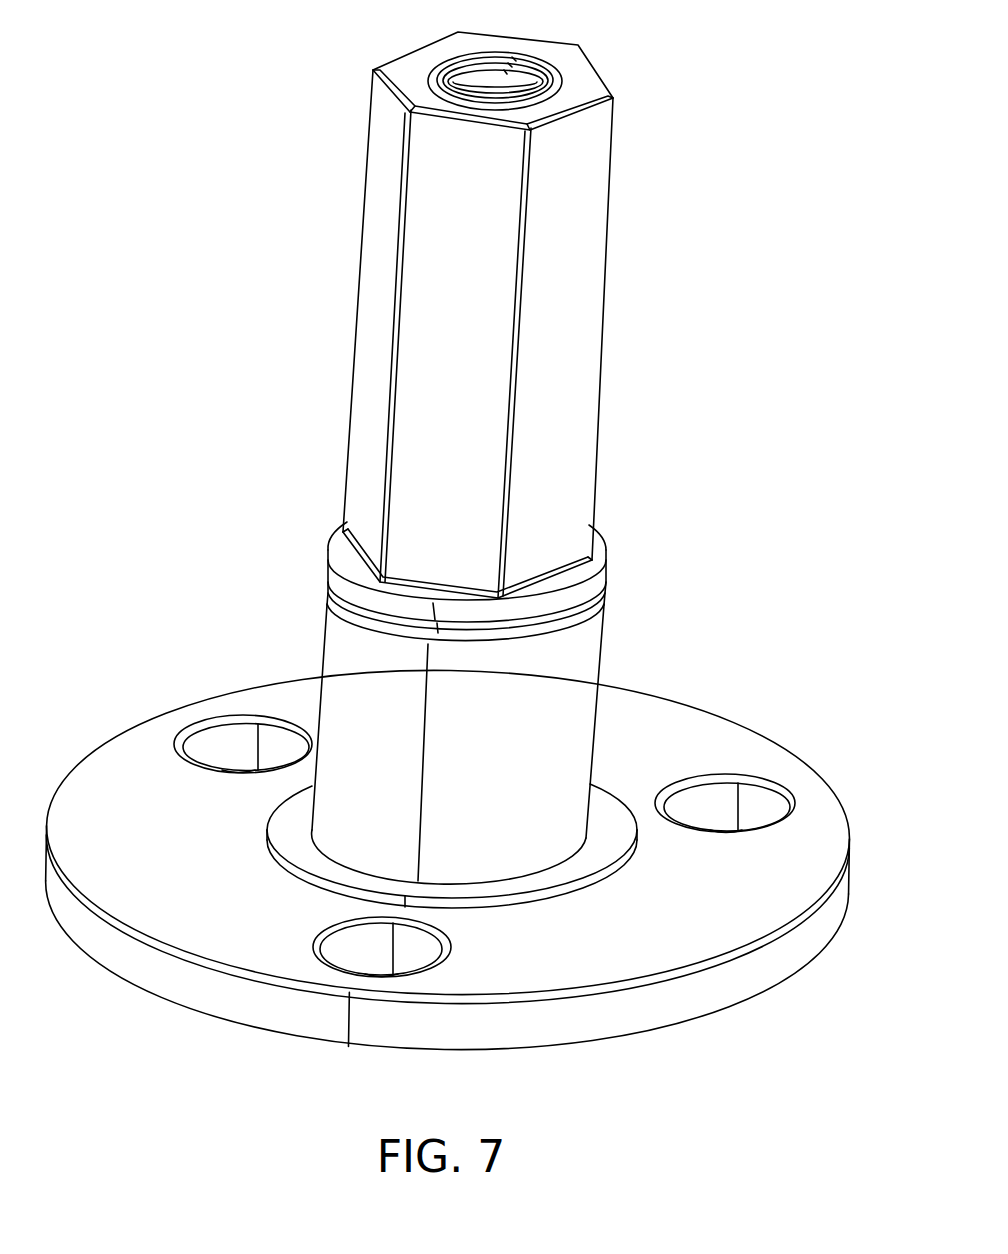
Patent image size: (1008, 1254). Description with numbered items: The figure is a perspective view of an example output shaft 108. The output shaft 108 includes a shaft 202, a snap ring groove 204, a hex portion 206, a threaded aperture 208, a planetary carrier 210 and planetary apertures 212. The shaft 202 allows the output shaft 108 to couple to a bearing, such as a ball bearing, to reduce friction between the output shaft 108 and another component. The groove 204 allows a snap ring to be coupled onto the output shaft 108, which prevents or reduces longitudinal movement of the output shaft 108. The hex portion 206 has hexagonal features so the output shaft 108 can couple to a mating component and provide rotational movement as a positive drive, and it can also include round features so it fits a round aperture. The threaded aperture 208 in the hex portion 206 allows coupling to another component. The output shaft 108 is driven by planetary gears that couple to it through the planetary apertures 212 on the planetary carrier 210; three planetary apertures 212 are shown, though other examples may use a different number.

The output shaft 108 is at (232, 138).
The shaft 202 is at (322, 655).
The snap ring groove 204 is at (328, 563).
The hex portion 206 is at (362, 260).
The threaded aperture 208 is at (533, 40).
The planetary carrier 210 is at (768, 922).
The planetary apertures 212 is at (210, 738).